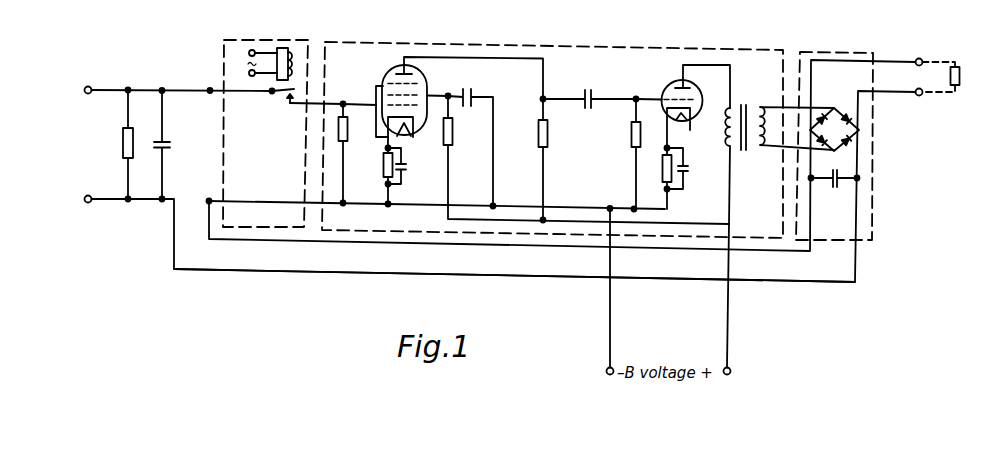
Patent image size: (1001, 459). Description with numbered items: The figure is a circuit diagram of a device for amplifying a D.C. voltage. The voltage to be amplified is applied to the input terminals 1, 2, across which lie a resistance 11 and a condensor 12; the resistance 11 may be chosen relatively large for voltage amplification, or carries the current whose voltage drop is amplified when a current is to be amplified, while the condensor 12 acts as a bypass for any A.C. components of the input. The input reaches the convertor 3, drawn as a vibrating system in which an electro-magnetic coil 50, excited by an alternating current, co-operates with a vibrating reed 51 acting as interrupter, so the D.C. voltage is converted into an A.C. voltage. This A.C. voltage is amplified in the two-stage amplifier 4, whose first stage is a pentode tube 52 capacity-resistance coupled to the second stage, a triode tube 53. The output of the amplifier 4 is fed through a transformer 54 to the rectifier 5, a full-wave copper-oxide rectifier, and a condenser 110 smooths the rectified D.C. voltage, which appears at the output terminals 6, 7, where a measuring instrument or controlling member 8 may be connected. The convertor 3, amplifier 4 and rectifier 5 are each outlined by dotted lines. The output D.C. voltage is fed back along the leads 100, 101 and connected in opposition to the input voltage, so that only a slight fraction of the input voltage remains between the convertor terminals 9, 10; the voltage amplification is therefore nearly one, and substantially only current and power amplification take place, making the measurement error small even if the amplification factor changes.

The input terminal 1 is at (89, 80).
The input terminal 2 is at (87, 189).
The convertor 3 is at (265, 121).
The amplifier 4 is at (552, 129).
The rectifier 5 is at (834, 133).
The output terminal 6 is at (920, 50).
The output terminal 7 is at (917, 105).
The measuring instrument or controlling member 8 is at (949, 77).
The convertor input terminal 9 is at (208, 80).
The convertor input terminal 10 is at (293, 191).
The resistance 11 is at (116, 144).
The condensor 12 is at (173, 145).
The electro-magnetic coil 50 is at (283, 48).
The vibrating reed 51 is at (280, 93).
The pentode tube 52 is at (390, 74).
The triode tube 53 is at (636, 133).
The transformer 54 is at (779, 153).
The feedback lead 100 is at (562, 163).
The feedback lead 101 is at (514, 283).
The condenser 110 is at (839, 181).